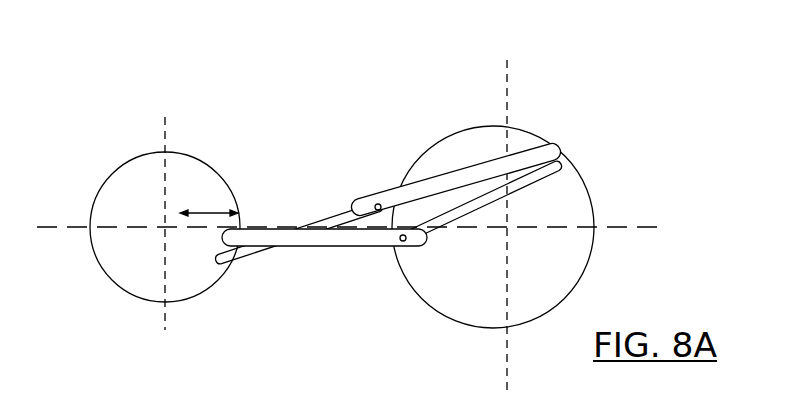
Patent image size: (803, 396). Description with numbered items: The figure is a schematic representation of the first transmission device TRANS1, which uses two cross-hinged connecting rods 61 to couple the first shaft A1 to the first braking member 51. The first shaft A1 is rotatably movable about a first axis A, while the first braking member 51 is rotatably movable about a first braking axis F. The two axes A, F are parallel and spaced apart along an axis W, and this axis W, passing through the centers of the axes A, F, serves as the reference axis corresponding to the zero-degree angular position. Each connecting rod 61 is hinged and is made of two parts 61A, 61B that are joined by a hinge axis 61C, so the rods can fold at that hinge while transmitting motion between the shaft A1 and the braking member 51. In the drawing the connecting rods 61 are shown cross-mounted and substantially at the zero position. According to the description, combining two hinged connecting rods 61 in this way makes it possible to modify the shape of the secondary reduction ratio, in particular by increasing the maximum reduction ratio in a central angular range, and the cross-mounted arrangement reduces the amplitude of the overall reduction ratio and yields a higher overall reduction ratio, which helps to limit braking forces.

The first transmission device TRANS1 is at (438, 170).
The connecting rod 61 is at (438, 192).
The first part of connecting rod 61A is at (340, 216).
The second part of connecting rod 61B is at (455, 170).
The hinge axis 61C is at (378, 204).
The first braking member 51 is at (452, 320).
The first shaft A1 is at (107, 279).
The first axis A is at (209, 237).
The first braking axis F is at (533, 253).
The reference axis W is at (372, 231).